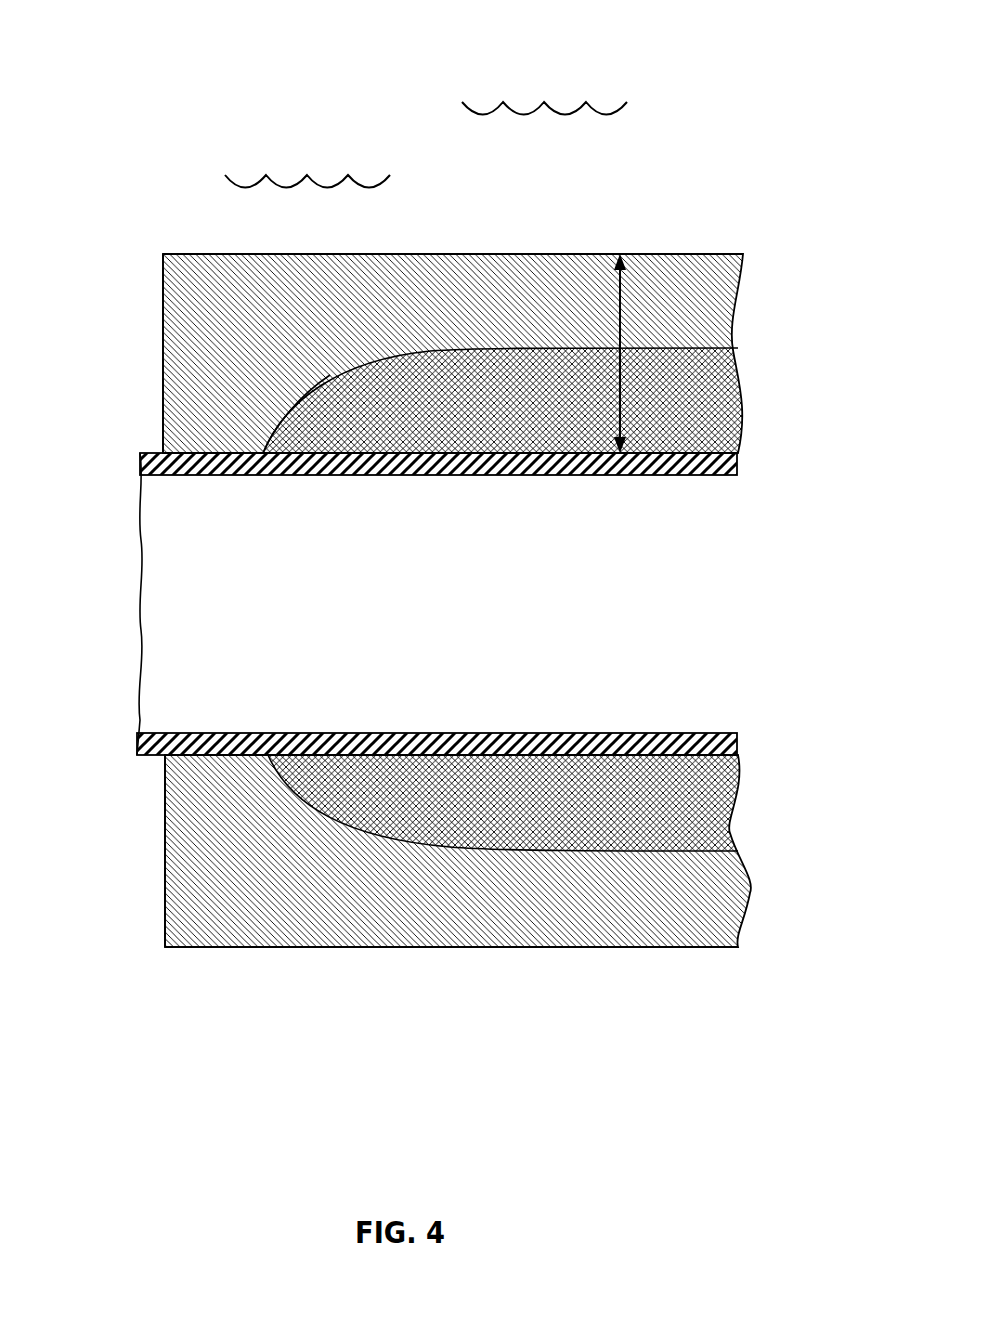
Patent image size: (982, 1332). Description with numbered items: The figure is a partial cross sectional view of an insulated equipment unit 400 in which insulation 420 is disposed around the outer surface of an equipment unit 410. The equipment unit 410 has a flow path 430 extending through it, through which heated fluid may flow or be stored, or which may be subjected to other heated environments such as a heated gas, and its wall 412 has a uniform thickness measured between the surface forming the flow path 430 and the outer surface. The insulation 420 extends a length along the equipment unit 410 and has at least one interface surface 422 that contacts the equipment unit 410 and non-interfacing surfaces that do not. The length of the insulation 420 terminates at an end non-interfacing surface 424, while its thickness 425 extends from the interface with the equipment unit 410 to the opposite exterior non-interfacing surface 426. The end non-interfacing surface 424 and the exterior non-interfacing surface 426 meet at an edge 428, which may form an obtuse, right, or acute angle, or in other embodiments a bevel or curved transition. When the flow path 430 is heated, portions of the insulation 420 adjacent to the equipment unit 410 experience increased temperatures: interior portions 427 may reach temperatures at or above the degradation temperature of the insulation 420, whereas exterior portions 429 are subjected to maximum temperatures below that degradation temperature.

The insulated equipment unit 400 is at (306, 94).
The equipment unit 410 is at (141, 456).
The wall 412 is at (125, 733).
The insulation 420 is at (680, 300).
The interface surface 422 is at (195, 452).
The end non-interfacing surface 424 is at (162, 383).
The thickness 425 is at (621, 290).
The exterior non-interfacing surface 426 is at (568, 253).
The interior portions 427 is at (491, 411).
The edge 428 is at (163, 256).
The exterior portions 429 is at (368, 318).
The flow path 430 is at (157, 621).